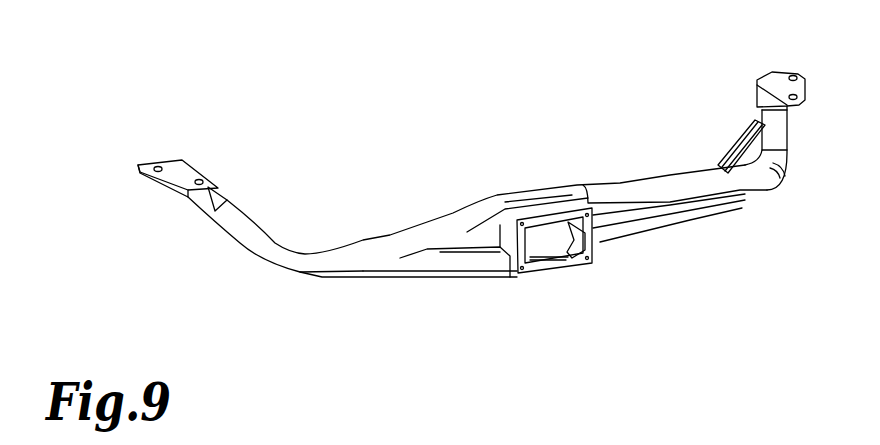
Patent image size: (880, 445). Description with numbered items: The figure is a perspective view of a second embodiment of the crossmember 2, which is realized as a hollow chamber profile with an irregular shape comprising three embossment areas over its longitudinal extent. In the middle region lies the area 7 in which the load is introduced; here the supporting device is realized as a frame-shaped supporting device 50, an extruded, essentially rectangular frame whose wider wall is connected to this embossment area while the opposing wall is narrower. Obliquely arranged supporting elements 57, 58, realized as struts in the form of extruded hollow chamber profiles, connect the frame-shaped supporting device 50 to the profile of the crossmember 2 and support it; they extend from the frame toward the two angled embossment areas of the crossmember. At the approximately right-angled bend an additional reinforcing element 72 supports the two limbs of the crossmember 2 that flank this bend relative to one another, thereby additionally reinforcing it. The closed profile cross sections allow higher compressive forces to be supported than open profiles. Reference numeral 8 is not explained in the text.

The mounting bracket 8 is at (168, 165).
The crossmember 2 is at (262, 245).
The area for introducing a load 7 is at (428, 88).
The reinforcing element 72 is at (727, 150).
The supporting element 57 is at (428, 262).
The frame-shaped supporting device 50 is at (547, 263).
The supporting element 58 is at (653, 216).